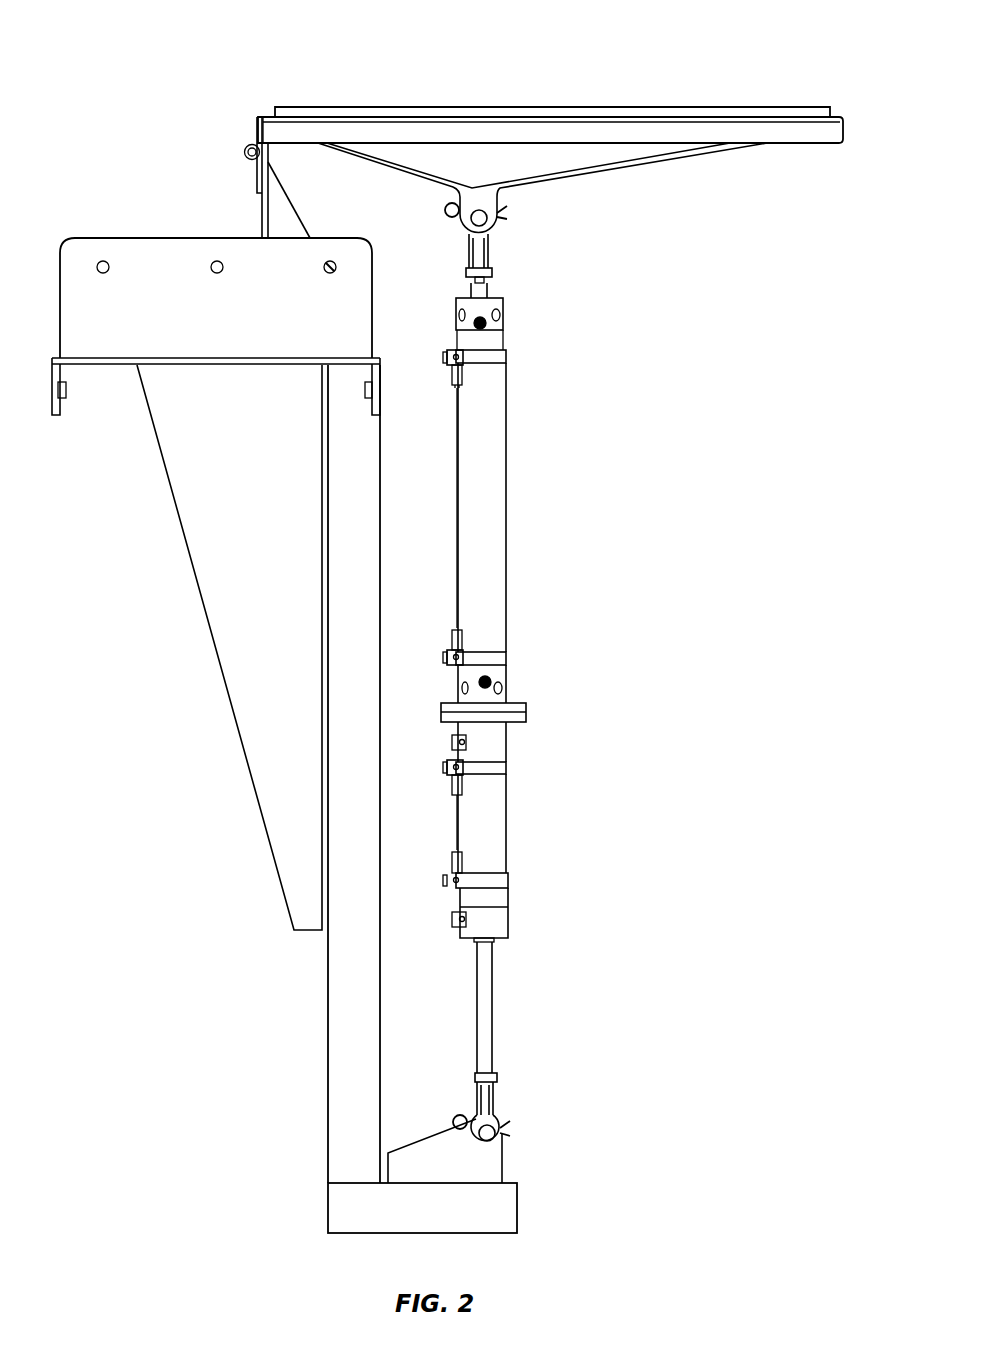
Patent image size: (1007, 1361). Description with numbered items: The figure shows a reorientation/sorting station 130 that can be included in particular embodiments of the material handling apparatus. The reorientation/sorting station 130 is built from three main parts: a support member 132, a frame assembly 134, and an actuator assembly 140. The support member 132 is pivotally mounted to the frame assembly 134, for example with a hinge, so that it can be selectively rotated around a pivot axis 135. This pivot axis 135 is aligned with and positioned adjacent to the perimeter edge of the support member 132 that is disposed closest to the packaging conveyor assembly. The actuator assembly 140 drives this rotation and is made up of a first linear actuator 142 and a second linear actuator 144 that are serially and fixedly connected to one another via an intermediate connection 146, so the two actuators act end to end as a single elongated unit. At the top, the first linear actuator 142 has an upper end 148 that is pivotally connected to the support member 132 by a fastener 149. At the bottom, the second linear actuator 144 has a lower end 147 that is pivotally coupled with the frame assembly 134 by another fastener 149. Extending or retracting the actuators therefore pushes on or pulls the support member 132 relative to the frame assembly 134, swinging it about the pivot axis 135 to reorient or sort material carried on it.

The reorientation/sorting station 130 is at (168, 86).
The support member 132 is at (665, 107).
The frame assembly 134 is at (328, 1088).
The pivot axis 135 is at (248, 158).
The actuator assembly 140 is at (545, 328).
The first linear actuator 142 is at (507, 450).
The second linear actuator 144 is at (508, 897).
The intermediate connection 146 is at (527, 715).
The lower end 147 is at (493, 1020).
The upper end 148 is at (492, 272).
The fastener 149 is at (490, 222).